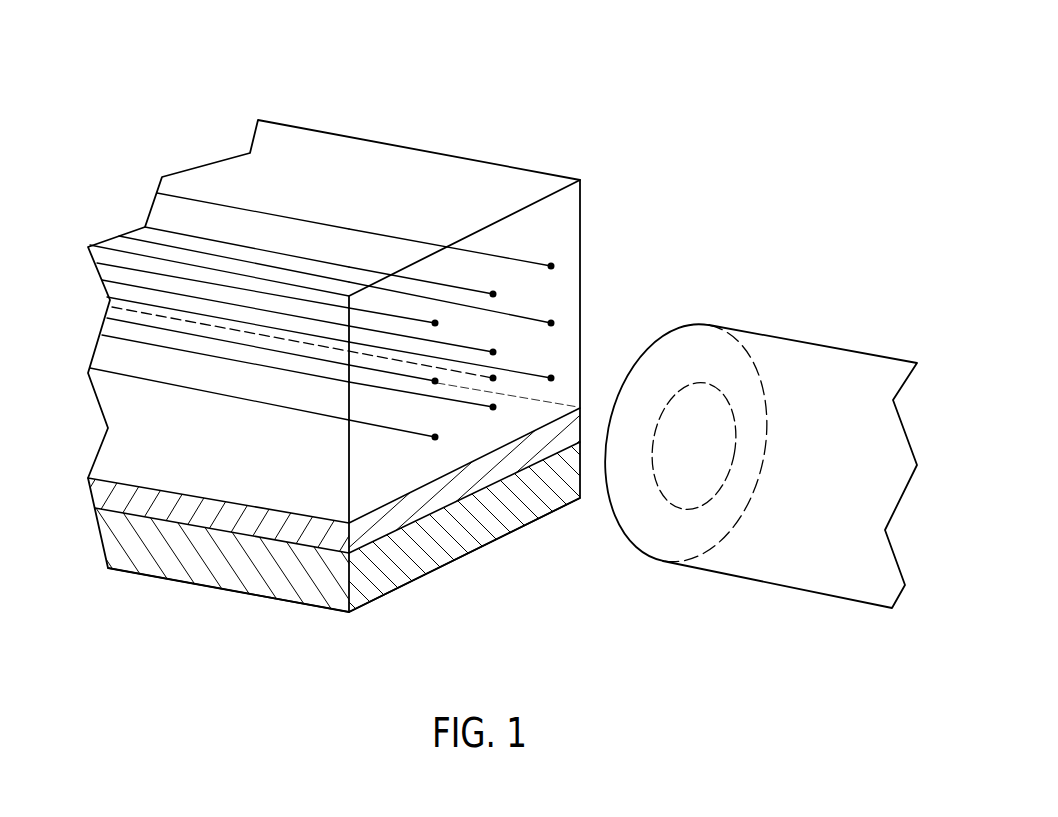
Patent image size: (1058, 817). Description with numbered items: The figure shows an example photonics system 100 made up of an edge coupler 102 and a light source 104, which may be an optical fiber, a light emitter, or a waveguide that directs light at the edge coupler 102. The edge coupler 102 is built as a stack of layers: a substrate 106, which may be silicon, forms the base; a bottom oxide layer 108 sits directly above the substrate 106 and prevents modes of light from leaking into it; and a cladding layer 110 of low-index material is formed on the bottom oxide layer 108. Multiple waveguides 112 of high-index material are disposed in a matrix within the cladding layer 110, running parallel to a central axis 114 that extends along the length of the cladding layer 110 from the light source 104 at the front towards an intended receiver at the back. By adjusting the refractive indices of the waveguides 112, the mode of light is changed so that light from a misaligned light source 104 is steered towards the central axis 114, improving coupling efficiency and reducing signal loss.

The photonics system 100 is at (646, 52).
The edge coupler 102 is at (442, 153).
The light source 104 is at (793, 340).
The substrate 106 is at (382, 580).
The bottom oxide layer 108 is at (102, 495).
The cladding layer 110 is at (110, 448).
The waveguides 112 is at (575, 383).
The central axis 114 is at (495, 378).